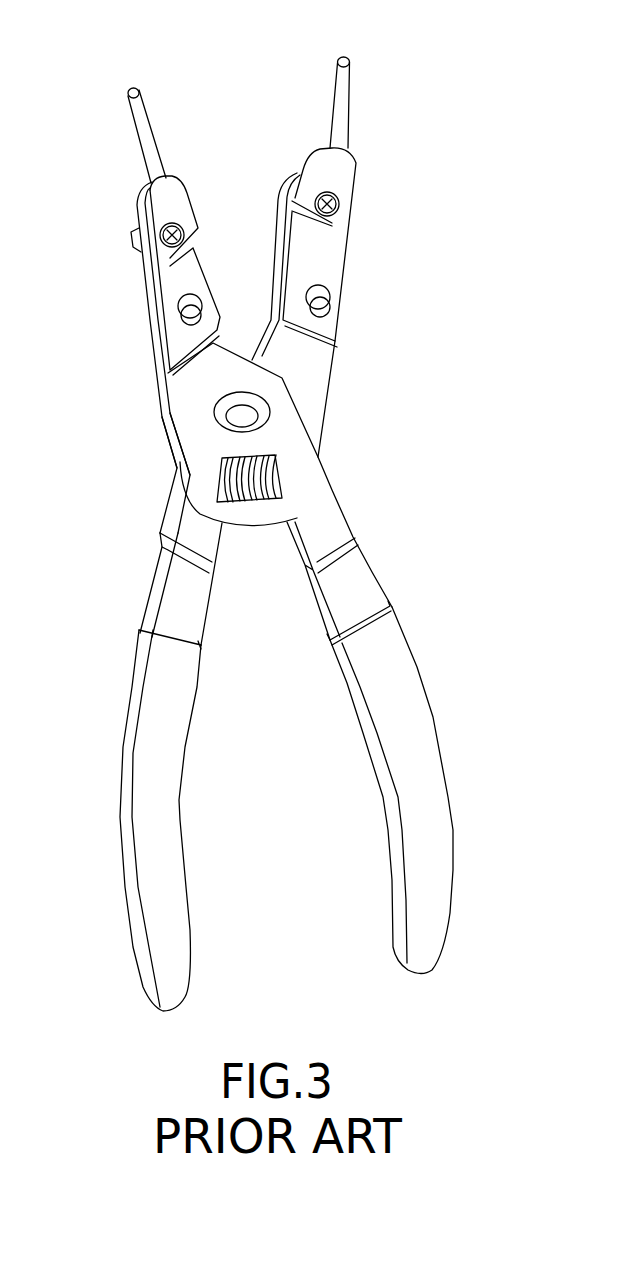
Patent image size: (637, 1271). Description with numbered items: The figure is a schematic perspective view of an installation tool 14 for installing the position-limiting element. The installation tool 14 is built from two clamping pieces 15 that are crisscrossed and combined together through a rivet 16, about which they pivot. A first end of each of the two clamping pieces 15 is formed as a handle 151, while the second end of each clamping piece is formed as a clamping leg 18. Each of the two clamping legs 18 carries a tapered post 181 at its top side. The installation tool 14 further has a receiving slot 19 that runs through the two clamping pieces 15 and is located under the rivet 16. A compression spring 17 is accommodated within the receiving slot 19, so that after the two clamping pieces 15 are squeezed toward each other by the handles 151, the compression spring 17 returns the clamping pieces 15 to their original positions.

The installation tool 14 is at (75, 41).
The clamping piece 15 is at (185, 527).
The handle 151 is at (148, 787).
The rivet 16 is at (243, 418).
The compression spring 17 is at (273, 445).
The clamping leg 18 is at (197, 280).
The tapered post 181 is at (148, 140).
The receiving slot 19 is at (220, 458).